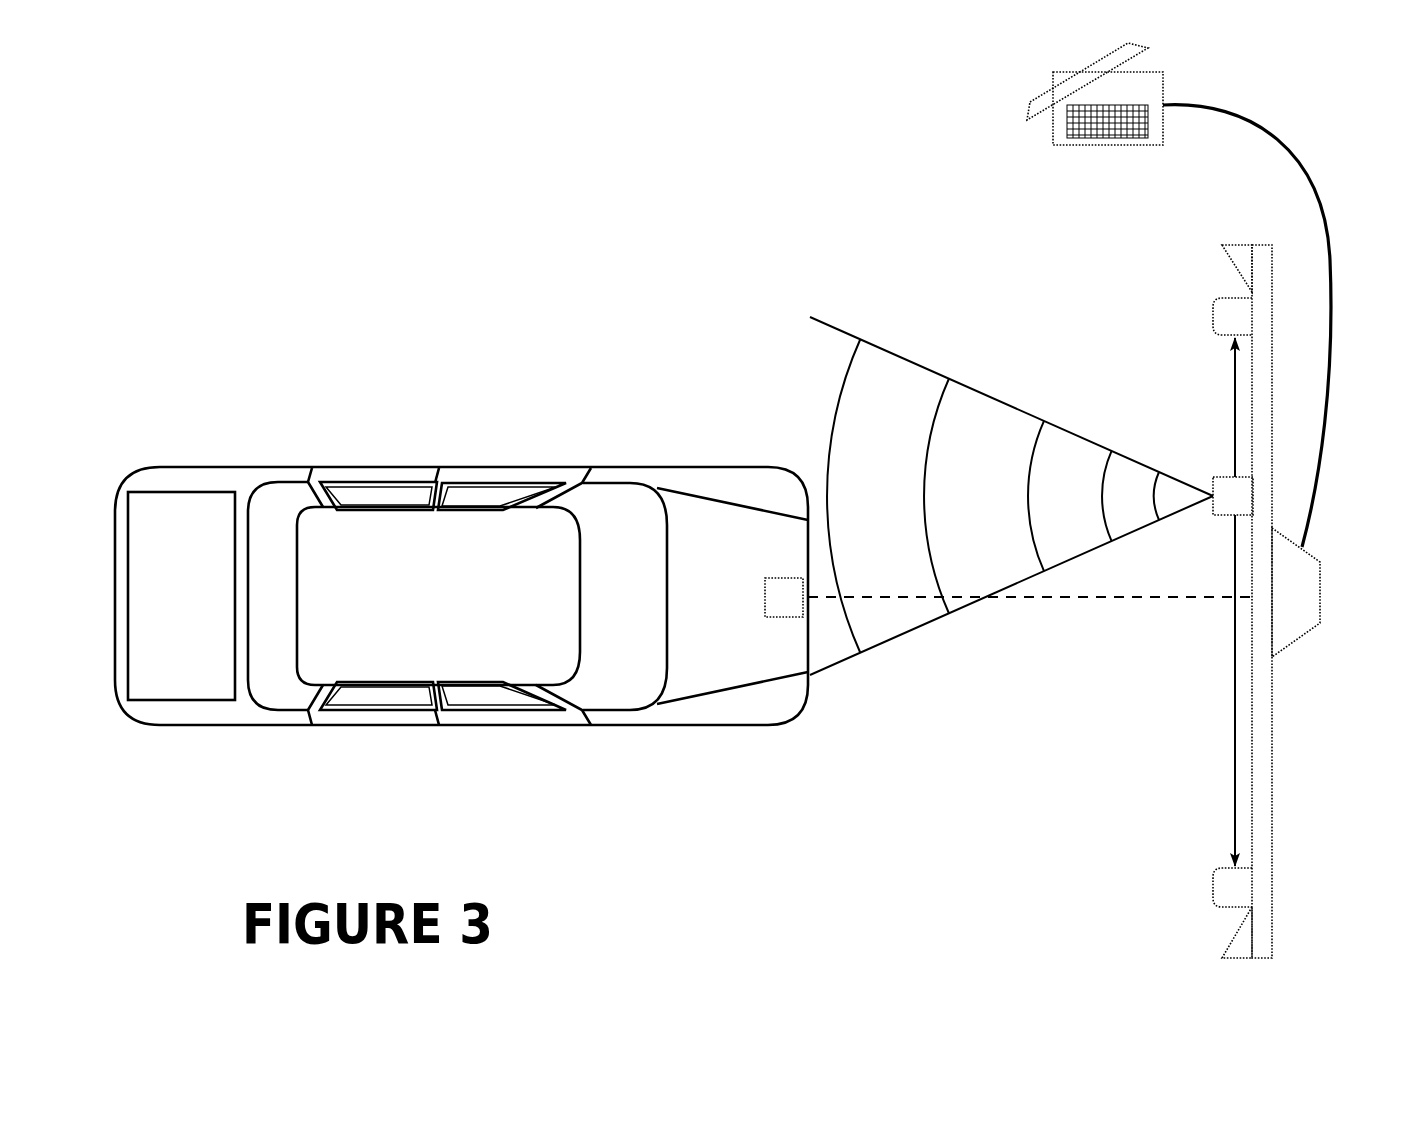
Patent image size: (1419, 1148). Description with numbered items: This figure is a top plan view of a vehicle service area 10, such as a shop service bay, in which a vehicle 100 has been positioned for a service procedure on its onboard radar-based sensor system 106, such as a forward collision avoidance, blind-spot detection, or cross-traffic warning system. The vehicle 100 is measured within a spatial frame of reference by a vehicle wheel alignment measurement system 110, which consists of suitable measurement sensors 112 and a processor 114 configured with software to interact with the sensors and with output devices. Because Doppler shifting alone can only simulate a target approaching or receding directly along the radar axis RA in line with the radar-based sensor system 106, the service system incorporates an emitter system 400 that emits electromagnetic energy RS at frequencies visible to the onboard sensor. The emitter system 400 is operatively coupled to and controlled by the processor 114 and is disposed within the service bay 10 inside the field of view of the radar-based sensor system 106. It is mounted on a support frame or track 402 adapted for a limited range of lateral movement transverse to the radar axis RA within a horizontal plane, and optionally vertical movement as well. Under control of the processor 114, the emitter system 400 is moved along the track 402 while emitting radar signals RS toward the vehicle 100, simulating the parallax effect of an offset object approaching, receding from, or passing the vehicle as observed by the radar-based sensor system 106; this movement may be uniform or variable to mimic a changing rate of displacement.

The vehicle service area 10 is at (680, 790).
The vehicle 100 is at (461, 577).
The radar-based sensor system 106 is at (782, 577).
The returned radar signals RS is at (822, 387).
The radar axis RA is at (1135, 600).
The vehicle wheel alignment measurement system 110 is at (1236, 531).
The measurement sensors 112 is at (1237, 247).
The processor 114 is at (1050, 148).
The emitter system 400 is at (1214, 475).
The support frame or track 402 is at (1247, 734).